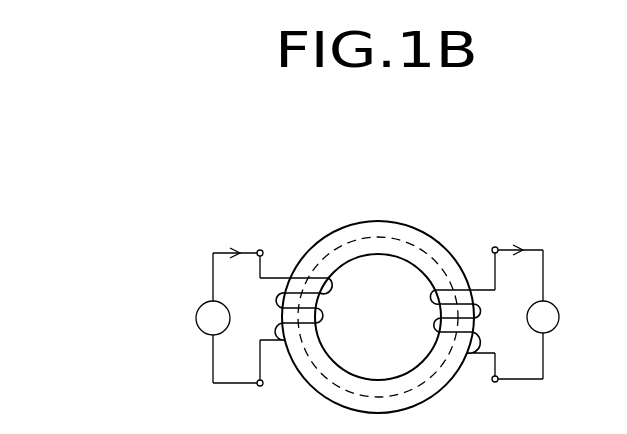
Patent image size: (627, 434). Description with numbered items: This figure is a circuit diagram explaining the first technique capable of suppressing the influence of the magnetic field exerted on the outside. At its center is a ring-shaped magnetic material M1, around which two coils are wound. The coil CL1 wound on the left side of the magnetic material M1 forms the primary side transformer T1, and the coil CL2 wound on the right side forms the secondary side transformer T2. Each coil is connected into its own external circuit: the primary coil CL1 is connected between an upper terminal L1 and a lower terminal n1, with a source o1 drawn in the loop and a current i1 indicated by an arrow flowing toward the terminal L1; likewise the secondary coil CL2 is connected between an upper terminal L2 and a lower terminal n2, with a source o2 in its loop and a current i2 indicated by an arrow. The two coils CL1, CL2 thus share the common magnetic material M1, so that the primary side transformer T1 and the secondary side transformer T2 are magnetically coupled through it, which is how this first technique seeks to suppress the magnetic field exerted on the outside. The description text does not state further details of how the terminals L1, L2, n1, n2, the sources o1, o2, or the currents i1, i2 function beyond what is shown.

The magnetic material M1 is at (300, 269).
The coil CL1 is at (312, 312).
The coil CL2 is at (436, 322).
The primary side transformer T1 is at (306, 249).
The secondary side transformer T2 is at (495, 246).
The first line terminal L1 is at (251, 238).
The second line terminal L2 is at (505, 263).
The first neutral terminal n1 is at (254, 366).
The second neutral terminal n2 is at (505, 367).
The first current i1 is at (229, 277).
The second current i2 is at (525, 275).
The first source o1 is at (213, 342).
The second source o2 is at (531, 340).